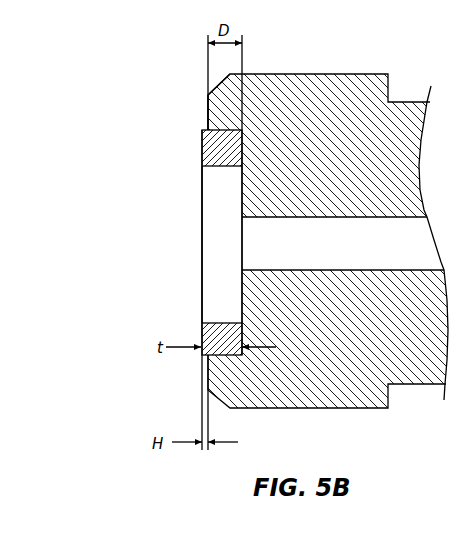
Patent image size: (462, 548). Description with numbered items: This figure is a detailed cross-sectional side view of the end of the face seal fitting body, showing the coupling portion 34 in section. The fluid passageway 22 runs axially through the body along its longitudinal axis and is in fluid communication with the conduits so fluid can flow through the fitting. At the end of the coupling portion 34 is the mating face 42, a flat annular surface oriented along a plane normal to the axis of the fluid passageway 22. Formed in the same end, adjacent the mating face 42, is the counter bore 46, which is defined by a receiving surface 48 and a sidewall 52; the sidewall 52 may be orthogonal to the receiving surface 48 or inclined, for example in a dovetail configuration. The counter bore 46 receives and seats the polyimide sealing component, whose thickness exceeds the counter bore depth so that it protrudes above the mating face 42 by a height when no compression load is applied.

The coupling portion 34 is at (329, 136).
The fluid passageway 22 is at (201, 145).
The mating face 42 is at (208, 113).
The receiving surface 48 is at (242, 193).
The counter bore 46 is at (212, 286).
The sidewall 52 is at (201, 331).